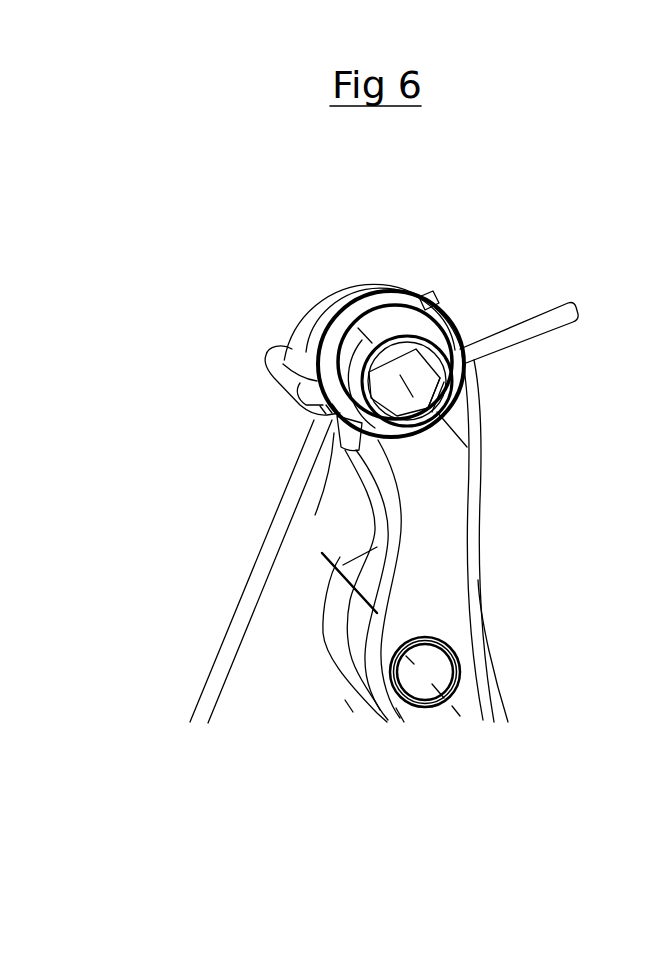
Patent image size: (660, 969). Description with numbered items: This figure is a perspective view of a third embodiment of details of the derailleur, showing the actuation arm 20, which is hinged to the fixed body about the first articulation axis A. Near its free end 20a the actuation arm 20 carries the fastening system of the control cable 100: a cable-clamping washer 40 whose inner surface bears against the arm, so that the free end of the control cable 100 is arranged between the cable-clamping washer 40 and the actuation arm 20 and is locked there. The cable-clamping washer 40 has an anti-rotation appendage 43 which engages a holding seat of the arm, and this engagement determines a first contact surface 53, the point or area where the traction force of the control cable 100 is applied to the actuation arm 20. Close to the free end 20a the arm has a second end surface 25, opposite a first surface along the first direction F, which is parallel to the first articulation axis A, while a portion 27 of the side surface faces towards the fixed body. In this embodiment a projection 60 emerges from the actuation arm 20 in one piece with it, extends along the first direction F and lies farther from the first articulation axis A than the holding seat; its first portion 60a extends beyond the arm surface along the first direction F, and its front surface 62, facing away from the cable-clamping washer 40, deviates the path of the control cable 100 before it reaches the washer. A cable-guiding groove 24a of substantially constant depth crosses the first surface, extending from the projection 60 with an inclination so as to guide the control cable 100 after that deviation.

The actuation arm 20 is at (445, 591).
The free end 20a is at (377, 262).
The cable-guiding groove 24a is at (430, 293).
The second end surface 25 is at (435, 528).
The portion 27 is at (343, 565).
The cable-clamping washer 40 is at (380, 292).
The anti-rotation appendage 43 is at (352, 447).
The first contact surface 53 is at (315, 515).
The projection 60 is at (262, 380).
The first portion 60a is at (305, 412).
The front surface 62 is at (290, 388).
The control cable 100 is at (203, 702).
The first articulation axis A is at (453, 708).
The first direction F is at (340, 306).